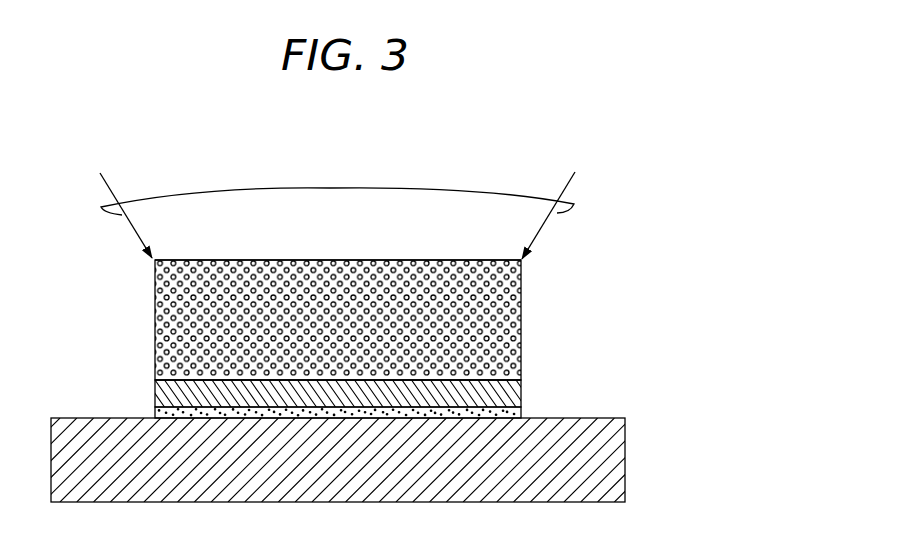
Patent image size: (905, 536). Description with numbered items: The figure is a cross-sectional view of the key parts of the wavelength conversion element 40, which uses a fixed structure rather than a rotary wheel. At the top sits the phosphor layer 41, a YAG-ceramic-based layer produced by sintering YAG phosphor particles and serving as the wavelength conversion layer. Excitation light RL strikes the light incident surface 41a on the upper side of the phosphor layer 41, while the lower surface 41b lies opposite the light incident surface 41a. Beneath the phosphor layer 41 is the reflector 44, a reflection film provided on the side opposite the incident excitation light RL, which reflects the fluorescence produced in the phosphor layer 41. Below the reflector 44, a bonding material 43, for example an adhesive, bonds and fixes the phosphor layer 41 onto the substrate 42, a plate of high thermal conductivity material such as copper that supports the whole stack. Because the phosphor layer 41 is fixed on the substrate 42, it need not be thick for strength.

The excitation light RL is at (340, 187).
The wavelength conversion element 40 is at (592, 262).
The phosphor layer 41 is at (497, 304).
The light incident surface 41a is at (176, 261).
The lower surface 41b is at (512, 388).
The substrate 42 is at (610, 472).
The bonding material 43 is at (517, 417).
The reflector 44 is at (167, 398).